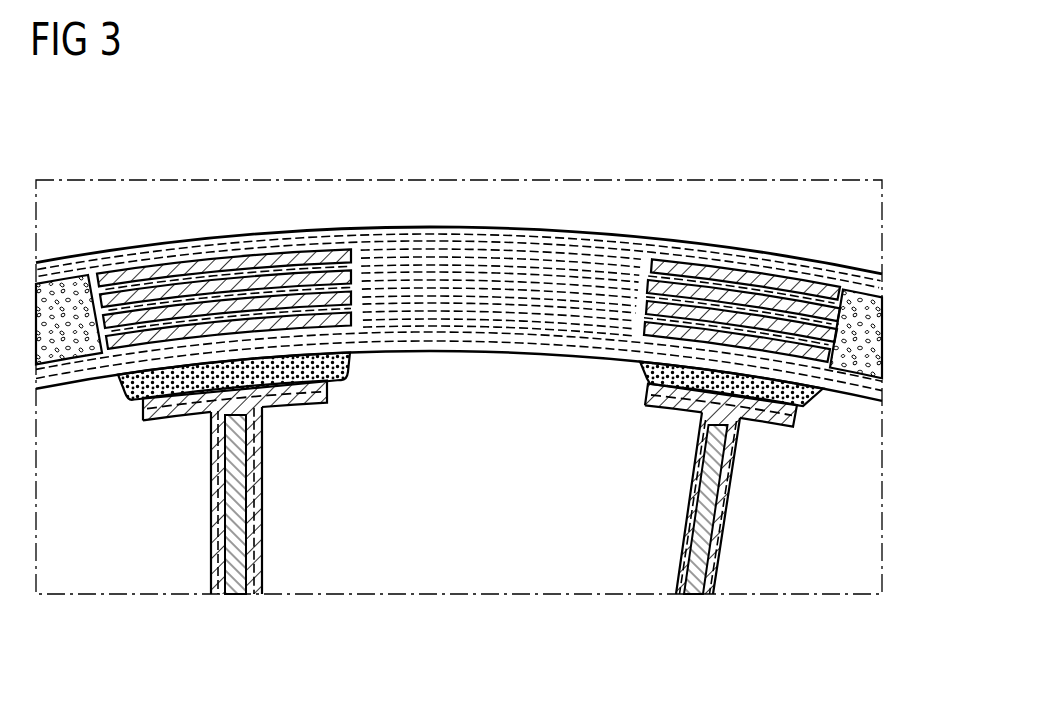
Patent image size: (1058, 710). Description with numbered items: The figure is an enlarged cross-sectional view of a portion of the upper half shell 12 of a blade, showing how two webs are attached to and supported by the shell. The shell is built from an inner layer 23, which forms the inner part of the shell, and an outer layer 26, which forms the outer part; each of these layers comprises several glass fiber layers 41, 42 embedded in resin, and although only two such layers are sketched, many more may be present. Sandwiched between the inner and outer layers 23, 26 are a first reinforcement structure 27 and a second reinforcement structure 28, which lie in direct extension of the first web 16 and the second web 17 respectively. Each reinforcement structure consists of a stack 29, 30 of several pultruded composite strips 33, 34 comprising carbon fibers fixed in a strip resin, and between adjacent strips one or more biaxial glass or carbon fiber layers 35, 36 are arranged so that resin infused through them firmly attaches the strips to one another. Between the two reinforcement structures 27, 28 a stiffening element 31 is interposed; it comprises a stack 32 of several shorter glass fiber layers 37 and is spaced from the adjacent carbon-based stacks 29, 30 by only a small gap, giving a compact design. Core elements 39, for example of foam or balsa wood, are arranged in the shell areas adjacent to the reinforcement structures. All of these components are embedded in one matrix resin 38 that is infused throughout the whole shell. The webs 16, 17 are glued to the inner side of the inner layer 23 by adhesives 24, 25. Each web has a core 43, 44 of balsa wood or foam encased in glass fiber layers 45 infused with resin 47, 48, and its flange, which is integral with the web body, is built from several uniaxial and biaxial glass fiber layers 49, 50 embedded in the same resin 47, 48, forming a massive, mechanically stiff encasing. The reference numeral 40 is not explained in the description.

The upper half shell 12 is at (857, 254).
The first web 16 is at (227, 532).
The second web 17 is at (689, 489).
The inner layer 23 is at (61, 386).
The adhesive 24 is at (344, 372).
The adhesive 25 is at (803, 397).
The outer layer 26 is at (187, 238).
The first reinforcement structure 27 is at (238, 252).
The second reinforcement structure 28 is at (808, 274).
The stack 29 is at (277, 250).
The stack 30 is at (679, 254).
The stiffening element 31 is at (535, 246).
The stack 32 is at (573, 249).
The pultruded composite strip 33 is at (160, 273).
The pultruded composite strip 34 is at (737, 300).
The glass or carbon fiber layer 35 is at (327, 287).
The glass or carbon fiber layer 36 is at (782, 320).
The glass fiber layer 37 is at (427, 263).
The resin 38 is at (530, 337).
The core element 39 is at (878, 346).
The end insulation block 40 is at (68, 308).
The glass fiber layer 41 is at (455, 337).
The glass fiber layer 42 is at (477, 232).
The core 43 is at (233, 594).
The core 44 is at (217, 503).
The glass fiber layer 45 is at (687, 491).
The resin 47 is at (259, 490).
The resin 48 is at (725, 518).
The glass fiber layer 49 is at (305, 398).
The glass fiber layer 50 is at (772, 418).